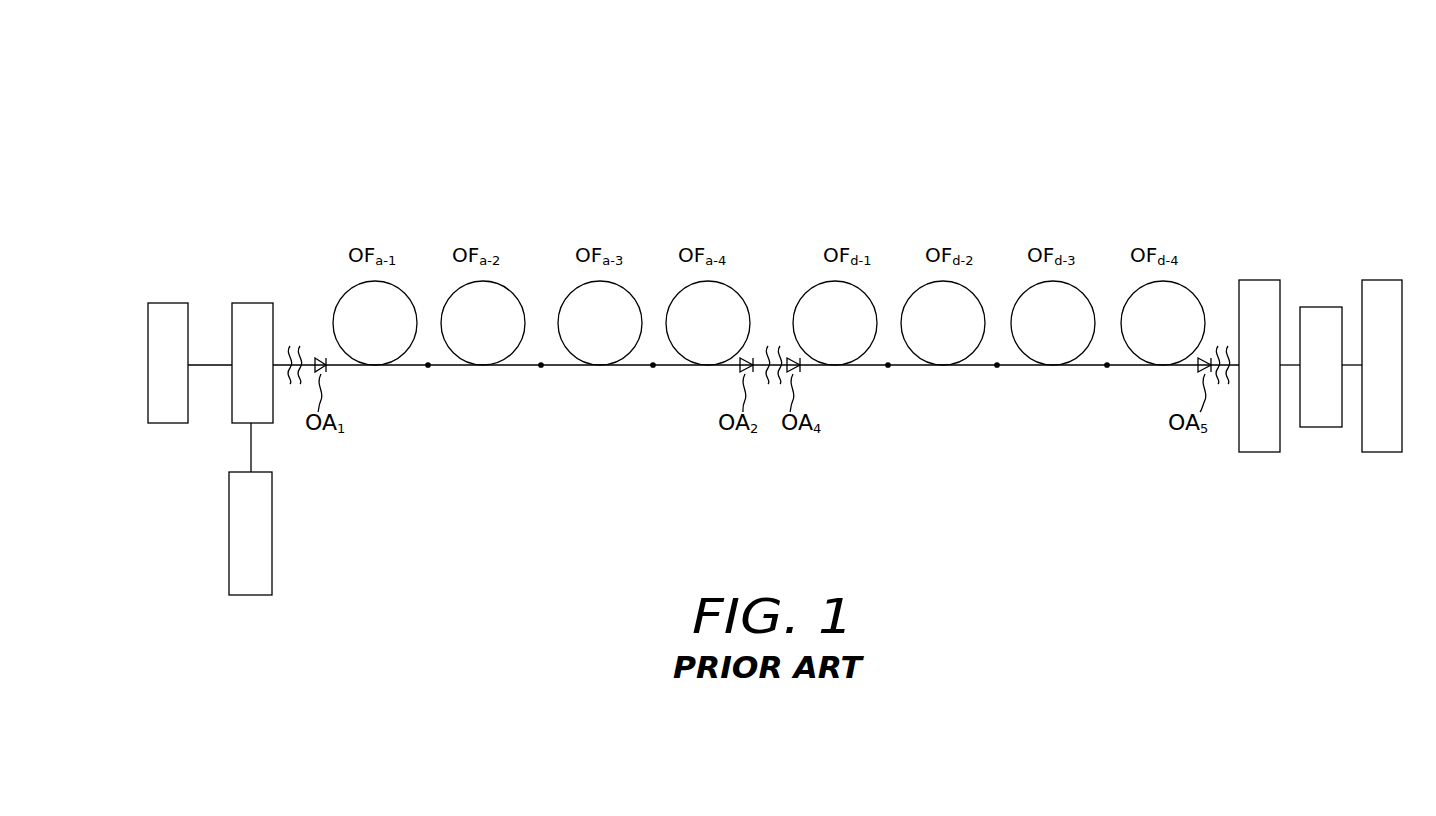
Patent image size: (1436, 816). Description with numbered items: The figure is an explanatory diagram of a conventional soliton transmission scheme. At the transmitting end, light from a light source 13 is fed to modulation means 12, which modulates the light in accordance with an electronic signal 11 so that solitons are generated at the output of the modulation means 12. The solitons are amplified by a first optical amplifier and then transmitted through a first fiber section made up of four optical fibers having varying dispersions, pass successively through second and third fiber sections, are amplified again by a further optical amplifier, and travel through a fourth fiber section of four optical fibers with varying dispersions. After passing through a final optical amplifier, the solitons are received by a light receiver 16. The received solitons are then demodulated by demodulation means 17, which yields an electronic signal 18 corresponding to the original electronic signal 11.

The electronic signal 11 is at (250, 595).
The modulation means 12 is at (255, 303).
The light source 13 is at (172, 303).
The light receiver 16 is at (1255, 452).
The demodulation means 17 is at (1322, 307).
The electronic signal 18 is at (1380, 452).